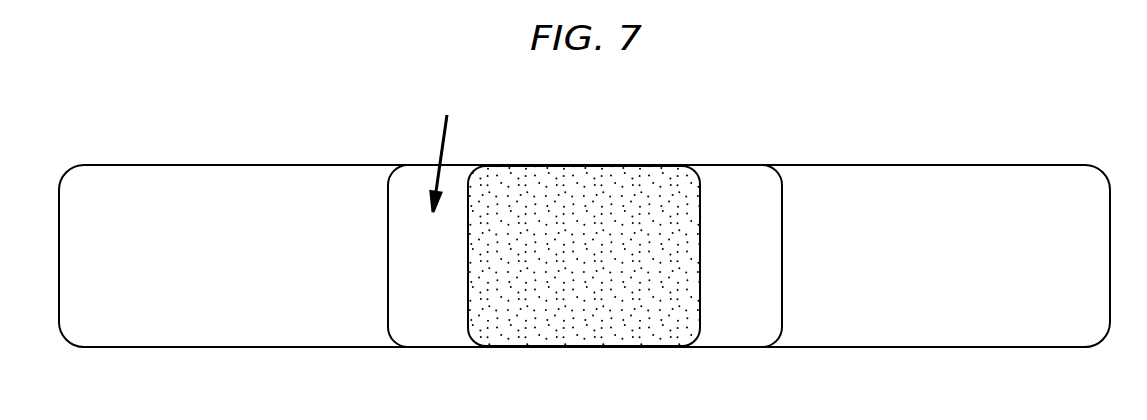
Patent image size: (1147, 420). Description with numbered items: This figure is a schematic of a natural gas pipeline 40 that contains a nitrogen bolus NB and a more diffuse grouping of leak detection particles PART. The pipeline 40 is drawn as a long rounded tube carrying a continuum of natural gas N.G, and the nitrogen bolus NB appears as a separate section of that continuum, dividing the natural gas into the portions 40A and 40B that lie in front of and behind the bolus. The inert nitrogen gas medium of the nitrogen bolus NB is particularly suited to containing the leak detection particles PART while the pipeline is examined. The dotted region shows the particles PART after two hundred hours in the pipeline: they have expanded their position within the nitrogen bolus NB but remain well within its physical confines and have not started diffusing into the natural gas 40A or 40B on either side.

The pipeline 40 is at (243, 347).
The natural gas section 40A is at (155, 254).
The natural gas section 40B is at (955, 238).
The nitrogen bolus NB is at (448, 338).
The leak detection particles PART is at (583, 347).
The natural gas N.G is at (160, 213).